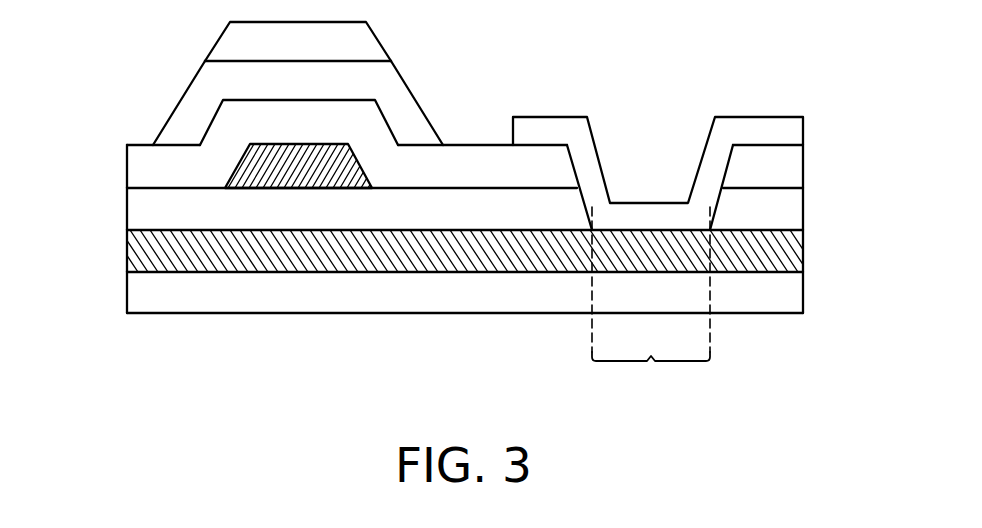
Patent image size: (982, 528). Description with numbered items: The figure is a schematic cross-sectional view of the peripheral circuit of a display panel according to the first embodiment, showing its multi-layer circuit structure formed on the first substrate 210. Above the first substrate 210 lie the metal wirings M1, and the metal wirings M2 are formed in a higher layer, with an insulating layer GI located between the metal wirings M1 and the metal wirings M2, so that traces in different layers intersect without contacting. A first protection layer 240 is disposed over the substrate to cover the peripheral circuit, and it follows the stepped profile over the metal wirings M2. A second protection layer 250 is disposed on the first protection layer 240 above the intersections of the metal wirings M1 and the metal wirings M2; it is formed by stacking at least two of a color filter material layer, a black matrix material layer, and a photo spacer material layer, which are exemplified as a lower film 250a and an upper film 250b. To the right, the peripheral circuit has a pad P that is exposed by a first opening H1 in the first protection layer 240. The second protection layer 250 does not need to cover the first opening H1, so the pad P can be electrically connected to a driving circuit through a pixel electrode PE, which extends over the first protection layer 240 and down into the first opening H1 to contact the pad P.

The first substrate 210 is at (792, 292).
The metal wirings M1 is at (792, 250).
The insulating layer GI is at (143, 210).
The metal wirings M2 is at (255, 172).
The first protection layer 240 is at (260, 120).
The first opening H1 is at (575, 166).
The pixel electrode PE is at (762, 127).
The second protection layer 250 is at (241, 75).
The film 250a is at (202, 84).
The film 250b is at (240, 42).
The pad P is at (651, 304).